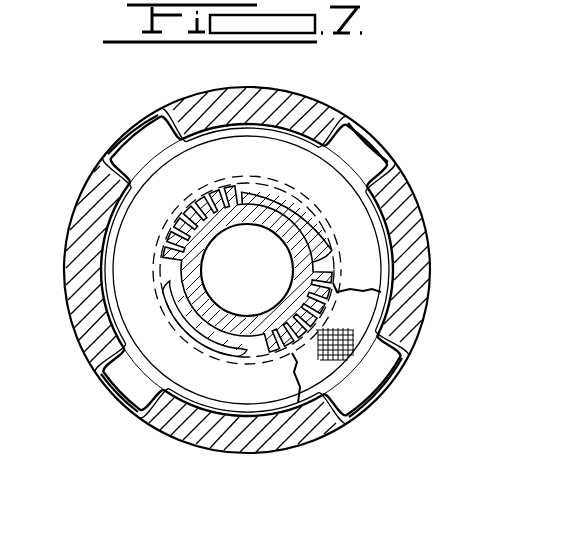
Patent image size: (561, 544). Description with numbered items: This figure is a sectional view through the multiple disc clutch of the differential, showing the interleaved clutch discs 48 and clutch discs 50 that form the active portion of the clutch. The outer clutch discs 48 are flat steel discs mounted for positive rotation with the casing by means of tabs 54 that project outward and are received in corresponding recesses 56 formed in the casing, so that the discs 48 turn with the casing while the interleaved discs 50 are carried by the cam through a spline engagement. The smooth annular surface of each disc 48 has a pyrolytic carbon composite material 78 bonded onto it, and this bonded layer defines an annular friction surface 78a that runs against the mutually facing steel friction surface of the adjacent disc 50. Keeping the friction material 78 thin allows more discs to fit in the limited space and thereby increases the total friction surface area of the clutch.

The clutch disc 48 is at (423, 298).
The clutch disc 50 is at (268, 408).
The tab 54 is at (137, 133).
The recess 56 is at (102, 156).
The pyrolytic carbon composite material 78 is at (337, 403).
The annular friction surface 78a is at (347, 353).